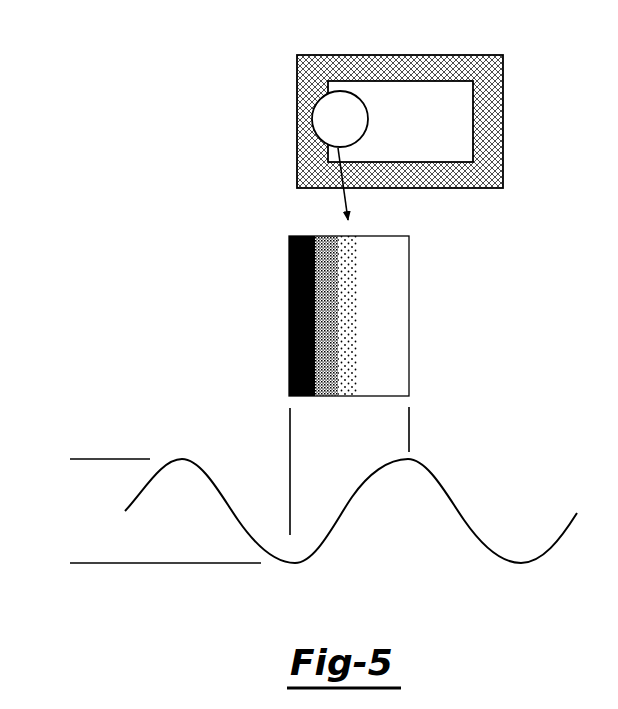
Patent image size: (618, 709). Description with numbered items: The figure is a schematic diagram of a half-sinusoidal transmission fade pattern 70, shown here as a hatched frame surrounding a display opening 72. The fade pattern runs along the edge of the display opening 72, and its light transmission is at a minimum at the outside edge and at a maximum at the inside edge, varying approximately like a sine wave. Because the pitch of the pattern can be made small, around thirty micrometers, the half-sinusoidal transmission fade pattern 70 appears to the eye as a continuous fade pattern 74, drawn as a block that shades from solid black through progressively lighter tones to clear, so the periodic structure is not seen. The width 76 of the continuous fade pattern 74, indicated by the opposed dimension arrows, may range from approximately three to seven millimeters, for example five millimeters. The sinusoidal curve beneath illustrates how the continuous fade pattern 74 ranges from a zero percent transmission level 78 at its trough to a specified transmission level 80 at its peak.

The half-sinusoidal transmission fade pattern 70 is at (400, 55).
The display opening 72 is at (418, 393).
The continuous fade pattern 74 is at (278, 393).
The width 76 is at (507, 423).
The zero percent transmission level 78 is at (150, 564).
The specified transmission level 80 is at (95, 460).